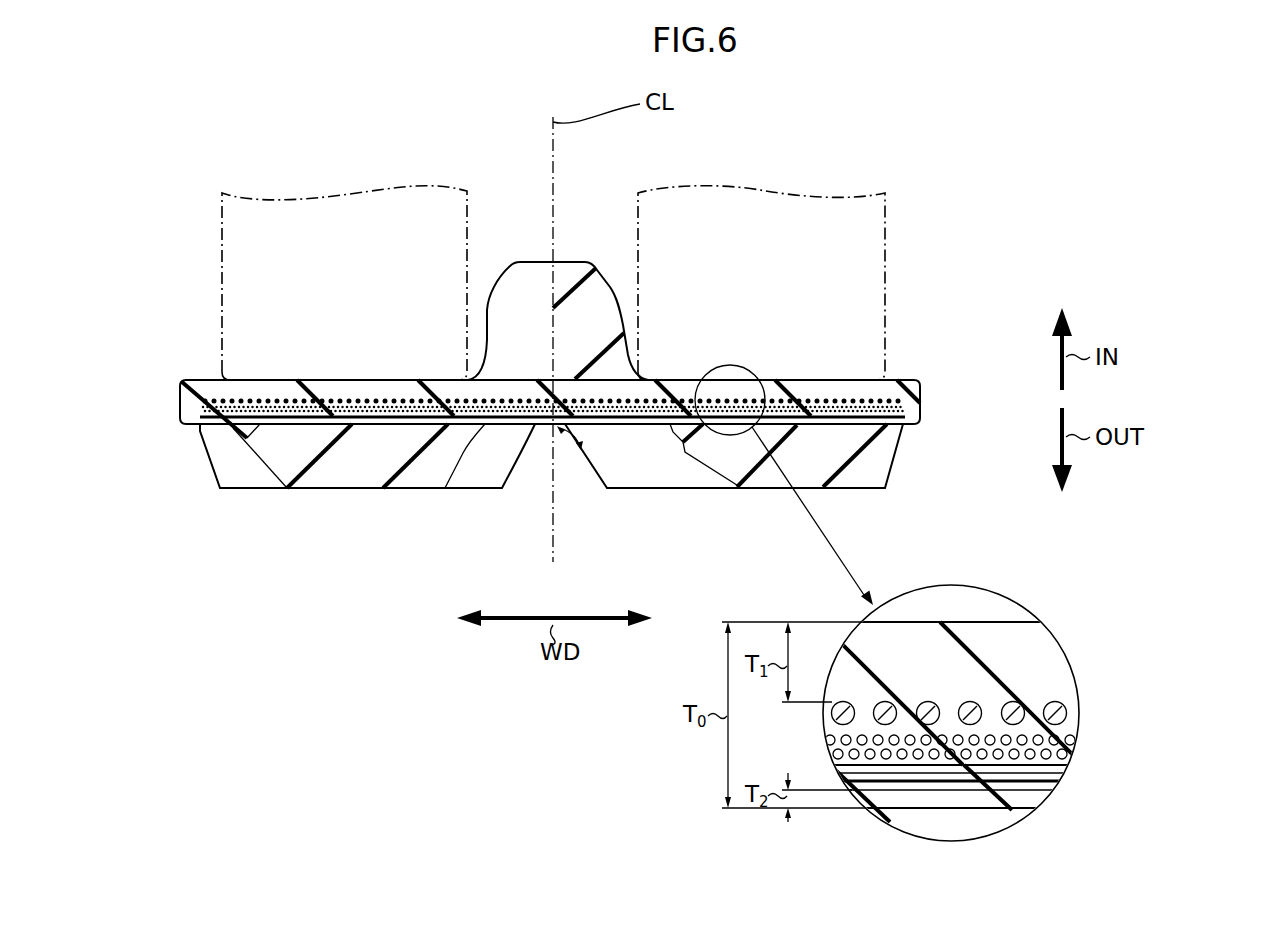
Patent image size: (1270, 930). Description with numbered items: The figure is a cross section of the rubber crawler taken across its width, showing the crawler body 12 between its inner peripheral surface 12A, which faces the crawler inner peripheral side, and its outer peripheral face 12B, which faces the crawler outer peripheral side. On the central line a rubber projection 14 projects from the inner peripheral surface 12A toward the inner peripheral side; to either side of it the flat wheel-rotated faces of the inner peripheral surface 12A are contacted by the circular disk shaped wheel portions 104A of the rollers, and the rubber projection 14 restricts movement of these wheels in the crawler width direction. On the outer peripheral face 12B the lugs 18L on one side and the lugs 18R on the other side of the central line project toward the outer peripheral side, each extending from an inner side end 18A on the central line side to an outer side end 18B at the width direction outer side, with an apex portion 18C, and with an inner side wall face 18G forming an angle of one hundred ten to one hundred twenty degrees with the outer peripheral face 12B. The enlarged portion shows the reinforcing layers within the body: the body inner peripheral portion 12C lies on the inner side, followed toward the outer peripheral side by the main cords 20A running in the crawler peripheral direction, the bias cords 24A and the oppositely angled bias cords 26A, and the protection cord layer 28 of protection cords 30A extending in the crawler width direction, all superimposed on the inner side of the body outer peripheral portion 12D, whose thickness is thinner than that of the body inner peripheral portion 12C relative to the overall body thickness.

The wheel portions 104A is at (887, 210).
The crawler body 12 is at (630, 568).
The inner peripheral surface 12A is at (490, 378).
The outer peripheral face 12B is at (548, 425).
The body inner peripheral portion 12C is at (512, 388).
The body outer peripheral portion 12D is at (940, 799).
The rubber projections 14 is at (565, 262).
The inner side end 18A is at (582, 441).
The outer side end 18B is at (913, 427).
The apex portion 18C is at (675, 489).
The inner side wall face 18G is at (580, 448).
The lugs on one side 18L is at (450, 494).
The lugs on the other side 18R is at (723, 494).
The main cords 20A is at (949, 713).
The bias cords 24A is at (950, 740).
The bias cords 26A is at (950, 754).
The protection cord layer 28 is at (952, 777).
The protection cord 30A is at (952, 773).